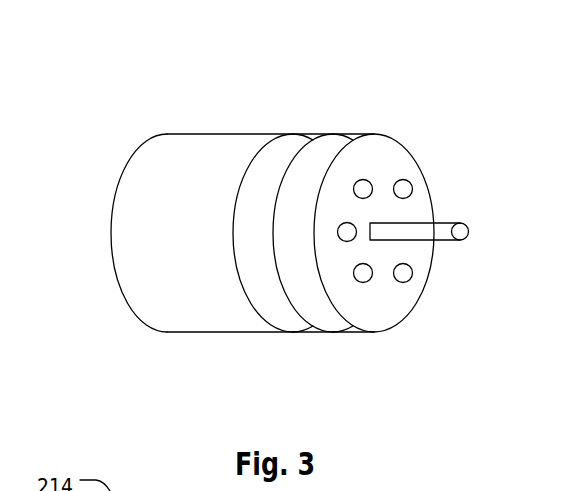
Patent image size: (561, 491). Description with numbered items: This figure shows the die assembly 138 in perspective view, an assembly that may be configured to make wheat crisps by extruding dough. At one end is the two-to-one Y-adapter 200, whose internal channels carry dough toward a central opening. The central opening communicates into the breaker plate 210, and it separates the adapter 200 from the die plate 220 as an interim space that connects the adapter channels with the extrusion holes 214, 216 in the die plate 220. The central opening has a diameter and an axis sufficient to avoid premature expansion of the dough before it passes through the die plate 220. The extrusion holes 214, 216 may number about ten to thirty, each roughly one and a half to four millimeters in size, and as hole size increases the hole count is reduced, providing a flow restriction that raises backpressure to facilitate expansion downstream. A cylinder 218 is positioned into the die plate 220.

The die assembly 138 is at (306, 227).
The 2 to 1 Y-adapter 200 is at (160, 232).
The breaker plate 210 is at (273, 300).
The die plate 220 is at (306, 300).
The extrusion holes 214 is at (363, 180).
The extrusion holes 216 is at (412, 274).
The cylinder 218 is at (437, 230).